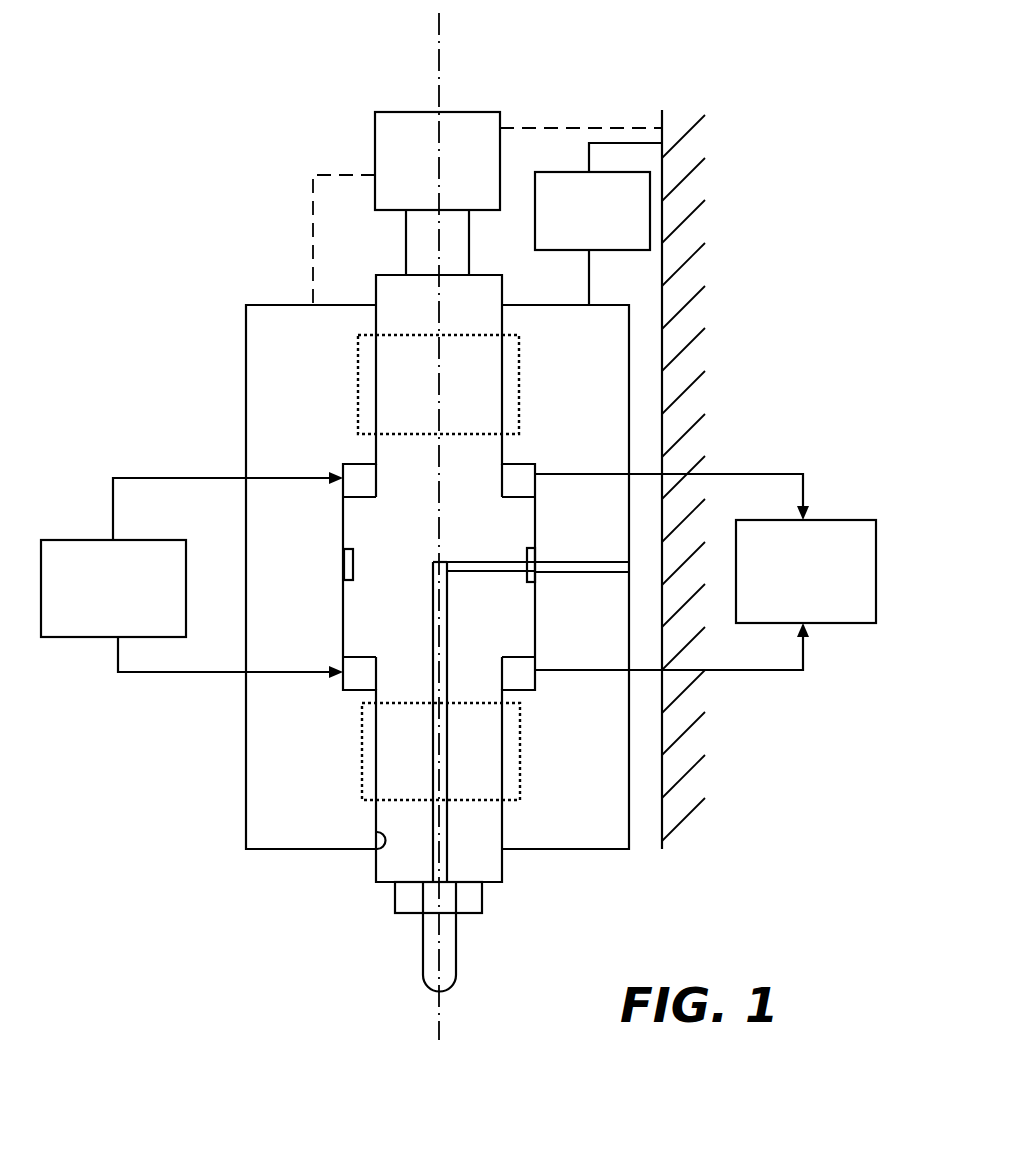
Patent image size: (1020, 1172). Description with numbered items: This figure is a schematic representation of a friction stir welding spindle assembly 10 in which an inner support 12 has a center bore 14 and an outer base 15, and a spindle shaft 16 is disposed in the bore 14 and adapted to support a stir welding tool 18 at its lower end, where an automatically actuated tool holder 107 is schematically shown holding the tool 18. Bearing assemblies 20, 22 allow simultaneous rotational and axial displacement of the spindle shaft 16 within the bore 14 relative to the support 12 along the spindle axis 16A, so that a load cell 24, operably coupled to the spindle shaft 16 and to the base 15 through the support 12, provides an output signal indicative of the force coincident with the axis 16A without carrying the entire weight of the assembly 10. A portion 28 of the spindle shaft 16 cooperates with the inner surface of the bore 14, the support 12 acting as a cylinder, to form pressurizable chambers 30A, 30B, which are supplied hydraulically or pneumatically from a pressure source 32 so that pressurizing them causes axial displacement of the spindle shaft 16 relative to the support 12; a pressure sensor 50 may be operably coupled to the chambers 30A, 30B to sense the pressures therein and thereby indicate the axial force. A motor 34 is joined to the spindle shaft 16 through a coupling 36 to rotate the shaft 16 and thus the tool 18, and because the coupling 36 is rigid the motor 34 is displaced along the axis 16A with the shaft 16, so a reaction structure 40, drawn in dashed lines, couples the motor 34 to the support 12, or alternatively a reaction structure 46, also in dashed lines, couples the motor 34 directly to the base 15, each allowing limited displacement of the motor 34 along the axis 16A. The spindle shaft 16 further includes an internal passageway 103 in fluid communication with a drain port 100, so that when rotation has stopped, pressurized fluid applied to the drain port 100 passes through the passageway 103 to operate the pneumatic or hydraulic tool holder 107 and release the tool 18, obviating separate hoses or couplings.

The friction stir welding spindle assembly 10 is at (268, 154).
The inner support 12 is at (268, 838).
The center bore 14 is at (375, 853).
The outer base 15 is at (680, 168).
The spindle shaft 16 is at (403, 873).
The spindle axis 16A is at (441, 52).
The stir welding tool 18 is at (457, 960).
The bearing assembly 20 is at (360, 742).
The bearing assembly 22 is at (355, 370).
The load cell 24 is at (566, 252).
The portion of the spindle shaft 28 is at (344, 583).
The pressurizable chamber 30A is at (538, 468).
The pressurizable chamber 30B is at (538, 688).
The pressure source 32 is at (138, 540).
The motor 34 is at (492, 112).
The coupling 36 is at (405, 242).
The reaction structure 40 is at (338, 174).
The reaction structure 46 is at (586, 127).
The pressure sensor 50 is at (826, 520).
The drain port 100 is at (578, 565).
The internal passageway 103 is at (465, 560).
The automatically actuated tool holder 107 is at (482, 902).